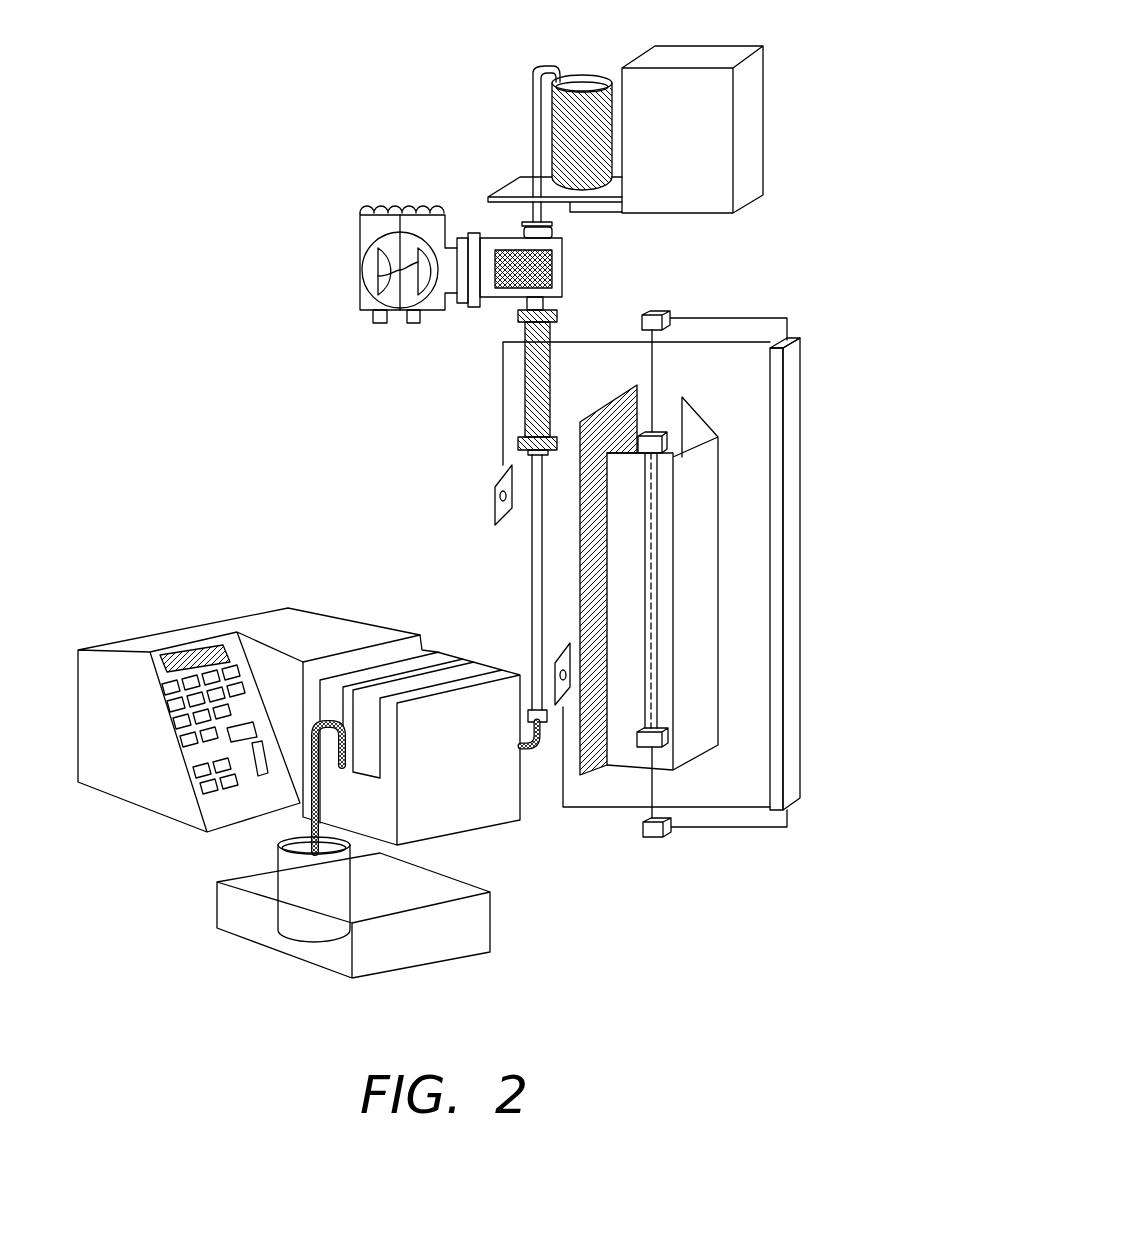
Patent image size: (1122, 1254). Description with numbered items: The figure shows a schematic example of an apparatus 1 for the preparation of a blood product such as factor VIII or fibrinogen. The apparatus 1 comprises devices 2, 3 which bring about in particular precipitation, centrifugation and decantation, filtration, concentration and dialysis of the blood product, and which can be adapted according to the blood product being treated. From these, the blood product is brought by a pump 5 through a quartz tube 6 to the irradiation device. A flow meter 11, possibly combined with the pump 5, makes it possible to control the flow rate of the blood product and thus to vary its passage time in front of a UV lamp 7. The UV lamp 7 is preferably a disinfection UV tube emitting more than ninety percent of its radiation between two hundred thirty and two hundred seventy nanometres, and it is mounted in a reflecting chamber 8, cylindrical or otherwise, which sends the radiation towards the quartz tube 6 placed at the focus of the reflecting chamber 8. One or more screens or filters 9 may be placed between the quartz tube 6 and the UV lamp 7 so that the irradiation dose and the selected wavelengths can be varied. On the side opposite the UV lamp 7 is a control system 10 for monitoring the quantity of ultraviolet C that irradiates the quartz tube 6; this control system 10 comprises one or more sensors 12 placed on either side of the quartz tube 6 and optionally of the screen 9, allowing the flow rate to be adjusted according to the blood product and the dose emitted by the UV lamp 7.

The apparatus 1 is at (597, 840).
The device 2 is at (353, 907).
The device 3 is at (692, 129).
The pump 5 is at (463, 782).
The quartz tube 6 is at (530, 540).
The UV lamp 7 is at (653, 690).
The reflecting chamber 8 is at (702, 560).
The screen 9 is at (583, 579).
The control system 10 is at (790, 803).
The flow meter 11 is at (372, 265).
The sensor 12 is at (490, 483).